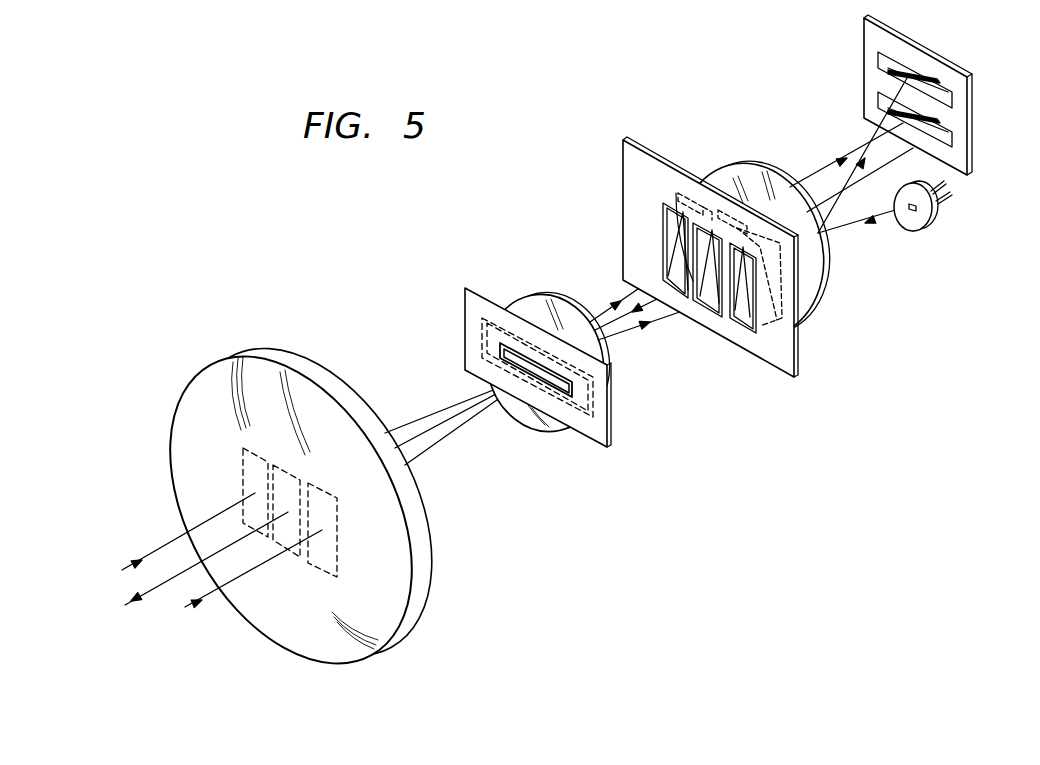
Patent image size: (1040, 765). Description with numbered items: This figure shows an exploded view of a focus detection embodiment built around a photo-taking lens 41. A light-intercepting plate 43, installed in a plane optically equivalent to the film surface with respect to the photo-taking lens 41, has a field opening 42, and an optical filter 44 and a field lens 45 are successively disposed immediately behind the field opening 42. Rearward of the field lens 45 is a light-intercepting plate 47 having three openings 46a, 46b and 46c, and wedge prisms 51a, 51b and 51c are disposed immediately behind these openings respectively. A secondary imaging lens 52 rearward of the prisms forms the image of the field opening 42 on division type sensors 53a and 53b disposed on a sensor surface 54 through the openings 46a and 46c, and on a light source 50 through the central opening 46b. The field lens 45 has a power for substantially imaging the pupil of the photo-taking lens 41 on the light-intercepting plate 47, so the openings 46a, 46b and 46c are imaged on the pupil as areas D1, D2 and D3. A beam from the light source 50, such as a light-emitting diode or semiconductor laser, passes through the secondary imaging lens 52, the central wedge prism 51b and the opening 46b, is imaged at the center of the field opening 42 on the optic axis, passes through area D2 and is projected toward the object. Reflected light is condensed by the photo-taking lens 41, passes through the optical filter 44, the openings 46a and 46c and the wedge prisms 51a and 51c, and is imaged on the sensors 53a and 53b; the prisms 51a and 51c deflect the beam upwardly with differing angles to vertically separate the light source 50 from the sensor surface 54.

The photo-taking lens 41 is at (182, 433).
The field opening 42 is at (553, 383).
The light-intercepting plate 43 is at (598, 395).
The optical filter 44 is at (612, 437).
The field lens 45 is at (555, 296).
The opening 46a is at (676, 282).
The opening 46b is at (710, 312).
The opening 46c is at (748, 332).
The light-intercepting plate 47 is at (790, 347).
The light source 50 is at (932, 226).
The wedge prism 51a is at (692, 187).
The wedge prism 51b is at (733, 187).
The wedge prism 51c is at (800, 258).
The secondary imaging lens 52 is at (774, 181).
The division type sensor 53a is at (952, 97).
The division type sensor 53b is at (952, 137).
The sensor surface 54 is at (866, 33).
The area D1 is at (325, 577).
The area D2 is at (297, 552).
The area D3 is at (262, 547).